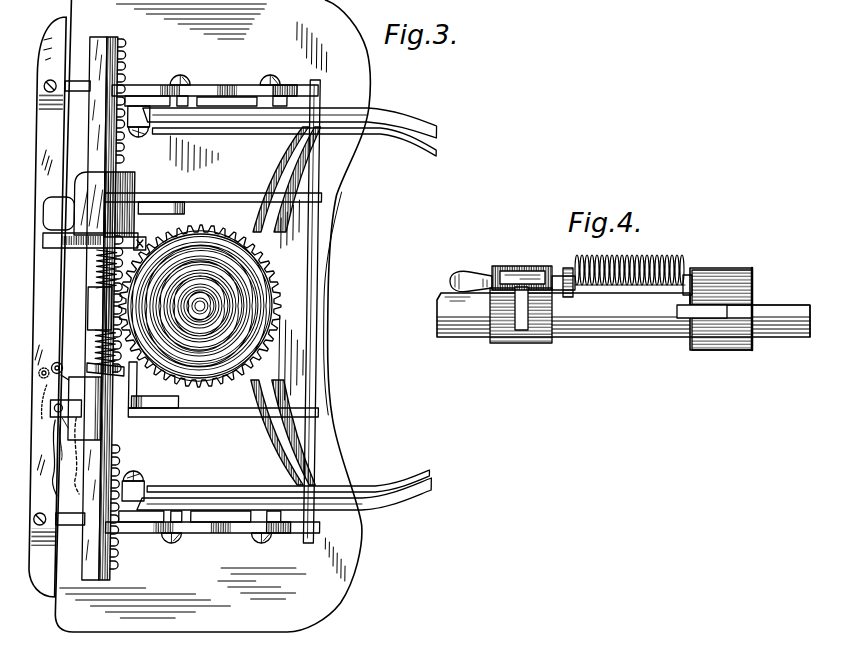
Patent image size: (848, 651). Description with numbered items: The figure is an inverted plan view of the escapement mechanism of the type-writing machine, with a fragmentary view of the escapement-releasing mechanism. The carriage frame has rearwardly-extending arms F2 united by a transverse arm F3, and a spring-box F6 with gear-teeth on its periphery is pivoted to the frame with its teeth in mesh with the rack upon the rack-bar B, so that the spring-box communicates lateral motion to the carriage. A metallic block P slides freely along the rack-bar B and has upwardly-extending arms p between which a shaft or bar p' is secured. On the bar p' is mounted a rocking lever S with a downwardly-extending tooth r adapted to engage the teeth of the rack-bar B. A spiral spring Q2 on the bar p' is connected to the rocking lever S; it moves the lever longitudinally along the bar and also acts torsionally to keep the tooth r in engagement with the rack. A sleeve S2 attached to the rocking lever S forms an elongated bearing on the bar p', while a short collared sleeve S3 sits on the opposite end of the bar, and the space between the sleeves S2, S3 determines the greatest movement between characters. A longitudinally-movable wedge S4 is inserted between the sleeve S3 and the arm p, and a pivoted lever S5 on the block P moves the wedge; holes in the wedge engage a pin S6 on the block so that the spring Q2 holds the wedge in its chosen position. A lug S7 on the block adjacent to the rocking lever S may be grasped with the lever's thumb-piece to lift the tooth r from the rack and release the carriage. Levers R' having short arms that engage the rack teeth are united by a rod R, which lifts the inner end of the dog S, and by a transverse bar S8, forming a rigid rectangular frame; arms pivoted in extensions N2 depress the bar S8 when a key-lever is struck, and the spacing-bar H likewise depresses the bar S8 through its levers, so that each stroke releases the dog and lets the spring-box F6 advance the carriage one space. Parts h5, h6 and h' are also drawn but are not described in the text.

In FIG. 3, the spacing-bar H is at (61, 307).
In FIG. 3, the rack-bar B is at (82, 546).
In FIG. 4, the rack-bar B is at (455, 328).
In FIG. 3, the rocking lever S is at (96, 235).
In FIG. 4, the rocking lever S is at (735, 268).
In FIG. 3, the extension or lug S7 is at (58, 213).
In FIG. 3, the tooth r is at (142, 240).
In FIG. 3, the levers R' is at (211, 311).
In FIG. 3, the rod R is at (139, 385).
In FIG. 3, the shaft or bar p' is at (151, 306).
In FIG. 4, the shaft or bar p' is at (580, 270).
In FIG. 3, the sleeve S2 is at (96, 252).
In FIG. 4, the sleeve S2 is at (652, 276).
In FIG. 3, the spiral spring Q2 is at (96, 260).
In FIG. 4, the spiral spring Q2 is at (688, 275).
In FIG. 3, the short sleeve S3 is at (96, 347).
In FIG. 4, the short sleeve S3 is at (629, 270).
In FIG. 3, the wedge S4 is at (56, 364).
In FIG. 4, the wedge S4 is at (569, 268).
In FIG. 3, the pivoted lever S5 is at (42, 394).
In FIG. 4, the pivoted lever S5 is at (542, 268).
In FIG. 3, the stud or pin S6 is at (81, 407).
In FIG. 3, the arms p is at (56, 448).
In FIG. 4, the arms p is at (614, 296).
In FIG. 3, the spring-box F6 is at (200, 306).
In FIG. 3, the transverse arm F3 is at (272, 228).
In FIG. 3, the transverse bar S8 is at (333, 247).
In FIG. 3, the rail h5 is at (204, 90).
In FIG. 3, the rail block h6 is at (289, 86).
In FIG. 3, the extensions N2 is at (138, 138).
In FIG. 3, the arms F2 is at (407, 120).
In FIG. 3, the rod h' is at (291, 310).
In FIG. 4, the metallic block P is at (757, 297).